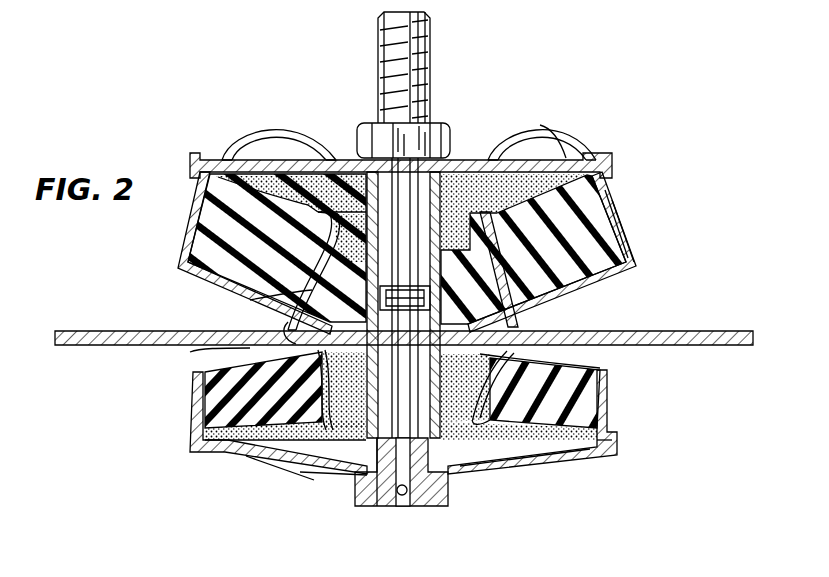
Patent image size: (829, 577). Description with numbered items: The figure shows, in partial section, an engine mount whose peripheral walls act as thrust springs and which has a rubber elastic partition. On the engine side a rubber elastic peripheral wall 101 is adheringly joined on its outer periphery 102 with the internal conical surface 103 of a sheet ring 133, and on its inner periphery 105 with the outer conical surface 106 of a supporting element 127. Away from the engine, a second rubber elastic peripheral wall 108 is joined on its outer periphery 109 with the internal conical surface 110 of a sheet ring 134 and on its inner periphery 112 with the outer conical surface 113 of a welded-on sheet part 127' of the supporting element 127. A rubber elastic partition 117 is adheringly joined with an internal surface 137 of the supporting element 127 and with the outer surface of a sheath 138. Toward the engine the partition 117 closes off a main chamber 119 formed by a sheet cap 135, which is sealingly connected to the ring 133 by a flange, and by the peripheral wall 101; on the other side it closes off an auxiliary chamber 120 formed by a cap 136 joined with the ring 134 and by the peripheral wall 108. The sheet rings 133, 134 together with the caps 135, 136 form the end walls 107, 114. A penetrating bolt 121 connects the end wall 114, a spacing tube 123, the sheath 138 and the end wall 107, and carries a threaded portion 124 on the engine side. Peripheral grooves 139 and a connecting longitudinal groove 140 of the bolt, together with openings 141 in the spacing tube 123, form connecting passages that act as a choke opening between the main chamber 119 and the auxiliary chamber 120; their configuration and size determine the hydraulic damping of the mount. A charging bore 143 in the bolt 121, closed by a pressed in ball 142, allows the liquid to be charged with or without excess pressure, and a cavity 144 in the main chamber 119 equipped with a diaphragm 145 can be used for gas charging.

The rubber elastic peripheral wall 101 is at (590, 282).
The outer periphery 102 is at (630, 268).
The internal conical surface 103 is at (618, 236).
The inner periphery 105 is at (277, 248).
The outer conical surface 106 is at (246, 296).
The end wall 107 is at (605, 170).
The rubber elastic peripheral wall 108 is at (550, 460).
The outer periphery 109 is at (612, 424).
The internal conical surface 110 is at (594, 382).
The inner periphery 112 is at (288, 449).
The outer conical surface 113 is at (285, 406).
The end wall 114 is at (204, 452).
The rubber elastic partition 117 is at (280, 308).
The main chamber 119 is at (365, 140).
The auxiliary chamber 120 is at (292, 472).
The penetrating bolt 121 is at (440, 500).
The spacing tube 123 is at (358, 218).
The threaded portion 124 is at (430, 50).
The supporting element 127 is at (404, 322).
The welded-on sheet part 127' is at (200, 355).
The sheet ring 133 is at (614, 210).
The sheet ring 134 is at (612, 406).
The sheet cap 135 is at (268, 112).
The cap 136 is at (272, 466).
The internal surface 137 is at (528, 314).
The sheath 138 is at (540, 352).
The peripheral groove 139 is at (327, 321).
The connecting longitudinal groove 140 is at (350, 334).
The opening 141 is at (456, 214).
The pressed in ball 142 is at (400, 500).
The charging bore 143 is at (404, 498).
The cavity 144 is at (524, 132).
The diaphragm 145 is at (544, 127).